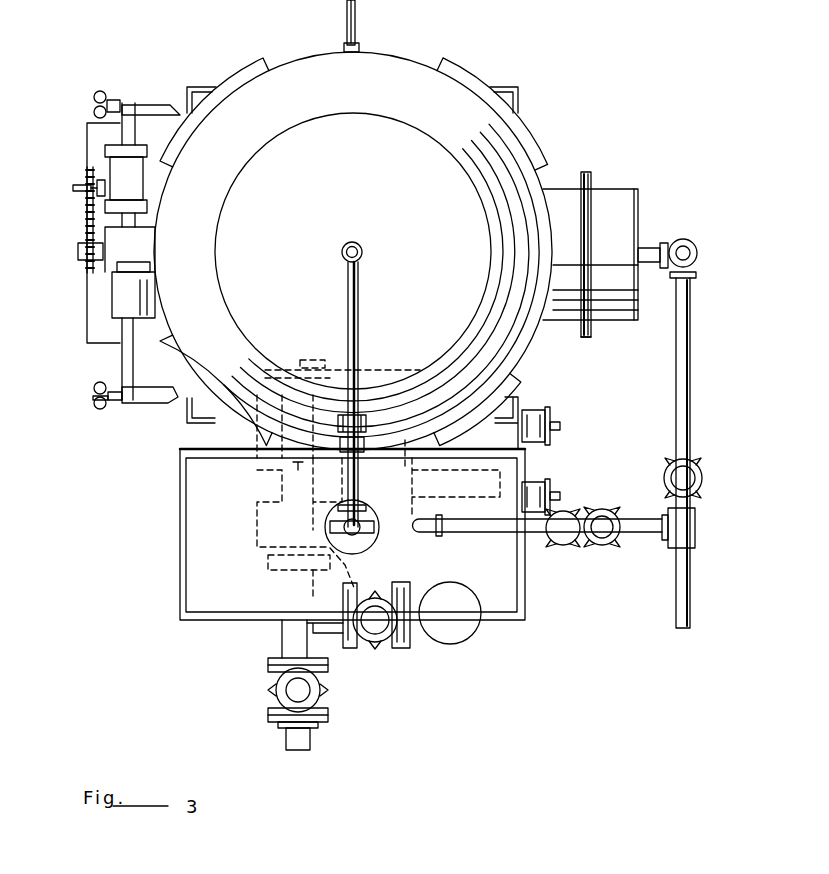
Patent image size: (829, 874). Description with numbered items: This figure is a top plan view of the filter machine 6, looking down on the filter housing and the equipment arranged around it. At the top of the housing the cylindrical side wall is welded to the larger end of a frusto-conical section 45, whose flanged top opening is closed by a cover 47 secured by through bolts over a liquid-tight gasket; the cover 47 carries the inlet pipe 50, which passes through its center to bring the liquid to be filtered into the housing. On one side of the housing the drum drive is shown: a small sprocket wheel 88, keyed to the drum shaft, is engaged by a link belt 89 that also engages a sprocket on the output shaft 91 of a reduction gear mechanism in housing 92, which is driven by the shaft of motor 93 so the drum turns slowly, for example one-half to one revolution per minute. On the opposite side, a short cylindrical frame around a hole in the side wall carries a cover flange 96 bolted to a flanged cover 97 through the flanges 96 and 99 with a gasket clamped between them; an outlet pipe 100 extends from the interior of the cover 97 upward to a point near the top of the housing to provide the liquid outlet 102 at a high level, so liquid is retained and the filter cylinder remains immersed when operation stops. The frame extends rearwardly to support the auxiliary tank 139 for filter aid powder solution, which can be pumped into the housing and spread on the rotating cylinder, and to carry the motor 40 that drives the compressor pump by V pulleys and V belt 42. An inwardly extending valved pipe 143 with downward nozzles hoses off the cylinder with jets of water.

The apparatus 6 is at (653, 216).
The motor 40 is at (490, 473).
The V belt 42 is at (386, 368).
The frusto-conical section 45 is at (293, 57).
The cover 47 is at (319, 125).
The inlet pipe 50 is at (360, 248).
The sprocket wheel 88 is at (78, 257).
The link belt 89 is at (86, 225).
The output shaft 91 is at (73, 188).
The housing 92 is at (113, 165).
The motor 93 is at (115, 303).
The cover flange 96 is at (586, 172).
The flanged cover 97 is at (607, 189).
The flange 99 is at (589, 338).
The outlet pipe 100 is at (691, 247).
The liquid outlet 102 is at (692, 373).
The auxiliary tank 139 is at (180, 577).
The valved pipe 143 is at (357, 13).